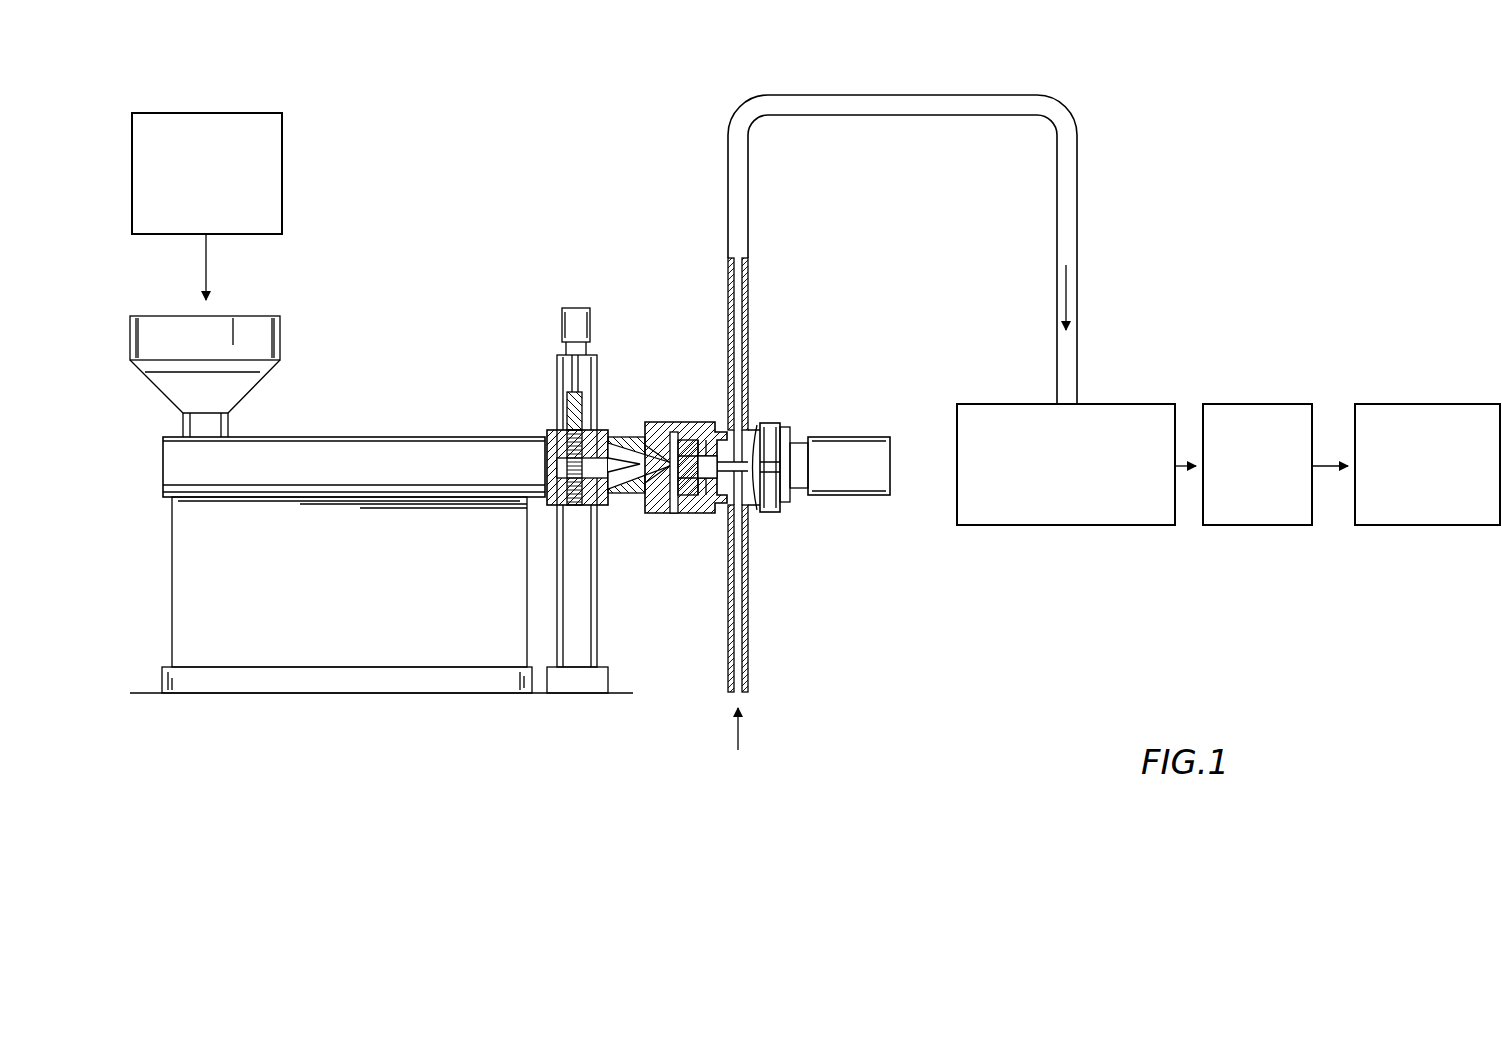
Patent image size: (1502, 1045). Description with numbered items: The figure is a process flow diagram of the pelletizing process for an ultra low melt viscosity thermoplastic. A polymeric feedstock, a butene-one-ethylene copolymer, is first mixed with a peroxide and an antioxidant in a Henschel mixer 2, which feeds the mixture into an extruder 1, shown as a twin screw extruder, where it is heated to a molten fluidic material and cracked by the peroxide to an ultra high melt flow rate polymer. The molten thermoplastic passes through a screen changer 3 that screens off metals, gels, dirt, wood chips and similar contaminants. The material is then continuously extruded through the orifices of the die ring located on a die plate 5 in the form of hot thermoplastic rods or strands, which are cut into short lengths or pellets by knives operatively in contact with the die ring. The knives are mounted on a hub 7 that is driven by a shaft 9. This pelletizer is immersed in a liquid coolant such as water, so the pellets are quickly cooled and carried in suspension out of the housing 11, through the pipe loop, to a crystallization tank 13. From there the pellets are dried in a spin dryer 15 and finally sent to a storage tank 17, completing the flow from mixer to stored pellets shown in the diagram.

The extruder 1 is at (337, 455).
The mixer 2 is at (283, 170).
The screen changer 3 is at (566, 420).
The die plate 5 is at (677, 428).
The hub 7 is at (712, 430).
The shaft 9 is at (741, 456).
The housing 11 is at (746, 492).
The crystallization tank 13 is at (1063, 527).
The spin dryer 15 is at (1268, 527).
The storage tank 17 is at (1430, 527).